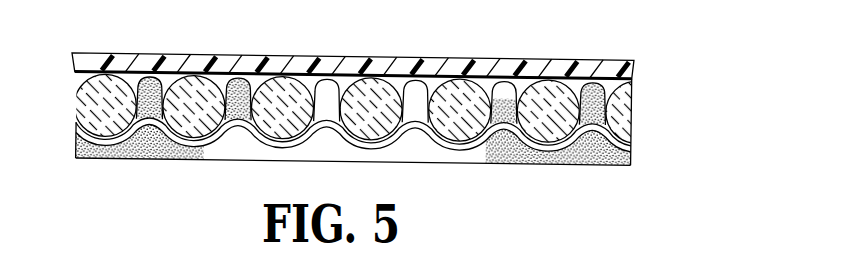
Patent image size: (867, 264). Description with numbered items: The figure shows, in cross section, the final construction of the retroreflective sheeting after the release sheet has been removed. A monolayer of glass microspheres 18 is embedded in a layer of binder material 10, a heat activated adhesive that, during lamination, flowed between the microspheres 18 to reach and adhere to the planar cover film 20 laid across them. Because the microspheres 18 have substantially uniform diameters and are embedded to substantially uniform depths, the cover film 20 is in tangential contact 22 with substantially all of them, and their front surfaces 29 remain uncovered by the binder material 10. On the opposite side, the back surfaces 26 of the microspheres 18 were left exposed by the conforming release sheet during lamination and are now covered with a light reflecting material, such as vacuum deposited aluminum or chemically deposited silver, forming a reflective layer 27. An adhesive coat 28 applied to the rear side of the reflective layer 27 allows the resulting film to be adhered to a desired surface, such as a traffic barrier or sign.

The layer of binder material 10 is at (592, 80).
The glass microspheres 18 is at (535, 88).
The cover film 20 is at (122, 62).
The tangential contact 22 is at (374, 63).
The back surfaces of the microspheres 26 is at (203, 147).
The reflective layer 27 is at (632, 145).
The adhesive coat 28 is at (597, 150).
The front surfaces of the microspheres 29 is at (257, 80).